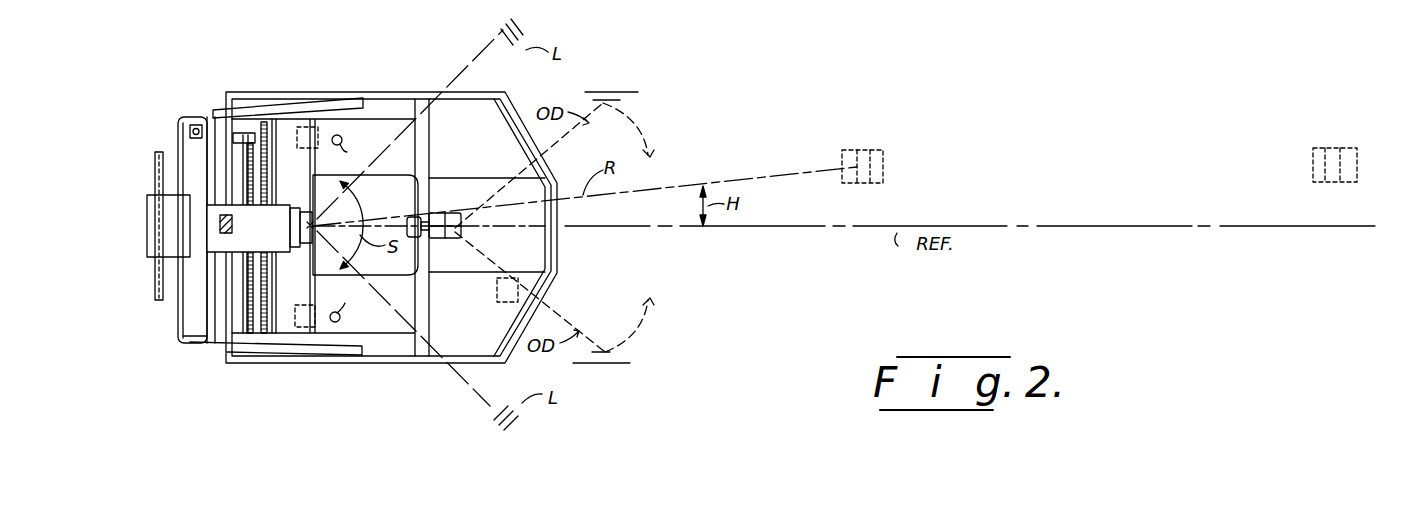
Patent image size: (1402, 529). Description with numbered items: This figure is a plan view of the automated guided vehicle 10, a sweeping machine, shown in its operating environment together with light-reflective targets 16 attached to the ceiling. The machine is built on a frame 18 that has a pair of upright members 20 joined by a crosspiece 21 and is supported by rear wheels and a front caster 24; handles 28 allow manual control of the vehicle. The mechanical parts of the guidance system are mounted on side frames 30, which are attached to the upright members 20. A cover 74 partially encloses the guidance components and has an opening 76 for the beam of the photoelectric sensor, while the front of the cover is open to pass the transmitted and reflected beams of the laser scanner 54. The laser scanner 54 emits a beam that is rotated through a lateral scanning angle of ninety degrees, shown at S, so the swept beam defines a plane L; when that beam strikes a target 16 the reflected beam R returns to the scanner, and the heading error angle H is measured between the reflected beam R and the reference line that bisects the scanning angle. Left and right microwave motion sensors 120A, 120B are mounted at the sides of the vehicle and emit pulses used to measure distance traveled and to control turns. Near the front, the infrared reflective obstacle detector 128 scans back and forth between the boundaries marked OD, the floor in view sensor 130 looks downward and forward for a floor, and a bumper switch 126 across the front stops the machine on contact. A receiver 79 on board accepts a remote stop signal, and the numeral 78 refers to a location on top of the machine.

The automated guided vehicle 10 is at (567, 262).
The light-reflective targets 16 is at (878, 152).
The frame 18 is at (422, 99).
The upright members 20 is at (352, 102).
The crosspiece 21 is at (190, 318).
The front caster 24 is at (472, 8).
The handles 28 is at (154, 310).
The side frames 30 is at (225, 116).
The laser scanner 54 is at (303, 250).
The cover 74 is at (278, 205).
The opening 76 is at (232, 230).
The mounting holes 78 is at (312, 161).
The receiver 79 is at (188, 131).
The left microwave motion sensor 120A is at (296, 139).
The right microwave motion sensor 120B is at (303, 330).
The bumper switch 126 is at (557, 215).
The infrared reflective obstacle detector 128 is at (462, 232).
The floor in view sensor 130 is at (497, 304).